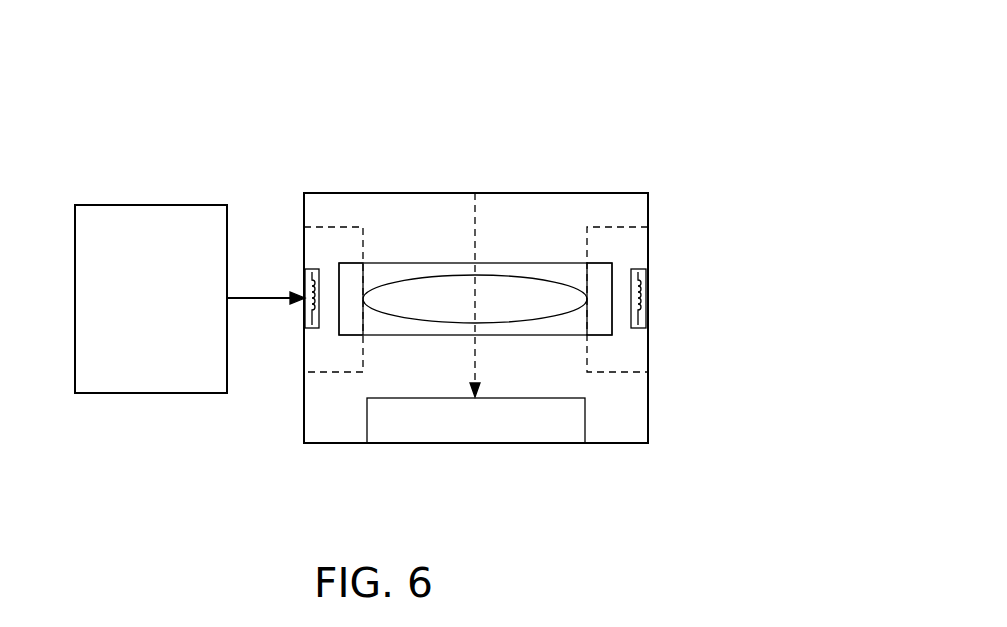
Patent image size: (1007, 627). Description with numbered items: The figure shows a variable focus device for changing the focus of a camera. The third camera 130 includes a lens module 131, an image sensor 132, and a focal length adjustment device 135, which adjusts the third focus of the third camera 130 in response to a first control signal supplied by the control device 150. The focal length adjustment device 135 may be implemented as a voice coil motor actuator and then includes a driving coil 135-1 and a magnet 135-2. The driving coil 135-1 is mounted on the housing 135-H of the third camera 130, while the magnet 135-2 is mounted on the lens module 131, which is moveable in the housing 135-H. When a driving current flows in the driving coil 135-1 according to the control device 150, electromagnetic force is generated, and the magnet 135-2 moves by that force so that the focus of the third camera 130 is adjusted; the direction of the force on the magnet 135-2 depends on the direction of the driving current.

The third camera 130 is at (651, 80).
The lens module 131 is at (520, 263).
The image sensor 132 is at (558, 444).
The focal length adjustment device 135 is at (319, 227).
The driving coil 135-1 is at (310, 328).
The magnet 135-2 is at (353, 263).
The housing 135-H is at (304, 425).
The control device 150 is at (200, 205).